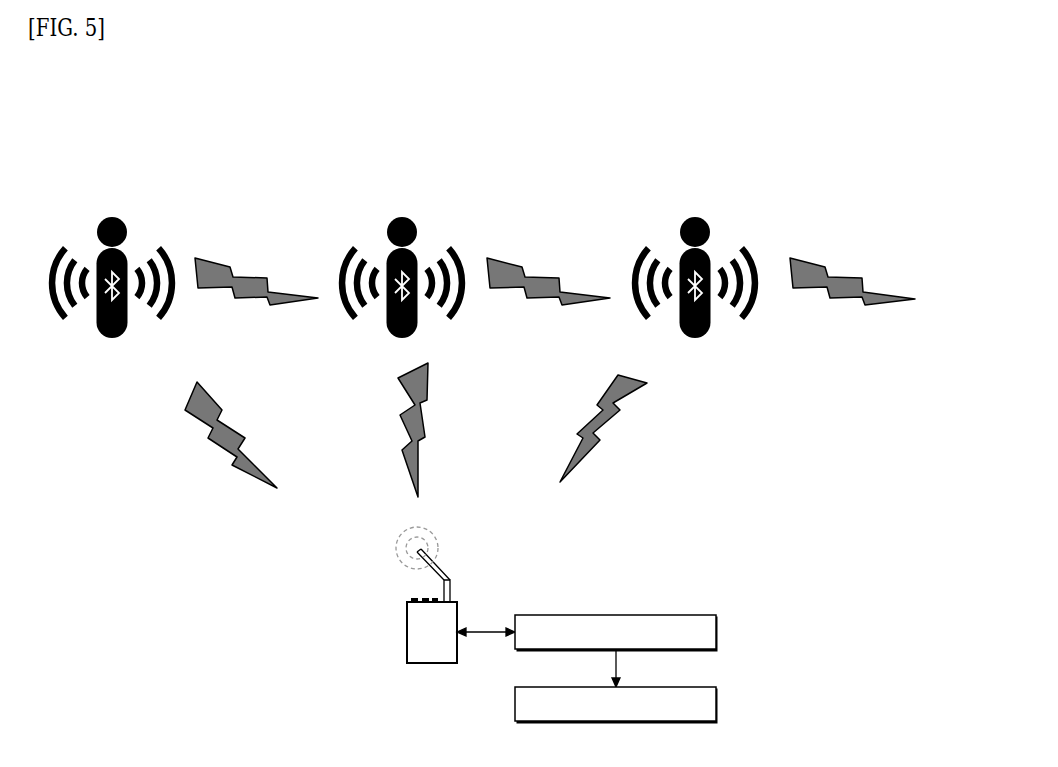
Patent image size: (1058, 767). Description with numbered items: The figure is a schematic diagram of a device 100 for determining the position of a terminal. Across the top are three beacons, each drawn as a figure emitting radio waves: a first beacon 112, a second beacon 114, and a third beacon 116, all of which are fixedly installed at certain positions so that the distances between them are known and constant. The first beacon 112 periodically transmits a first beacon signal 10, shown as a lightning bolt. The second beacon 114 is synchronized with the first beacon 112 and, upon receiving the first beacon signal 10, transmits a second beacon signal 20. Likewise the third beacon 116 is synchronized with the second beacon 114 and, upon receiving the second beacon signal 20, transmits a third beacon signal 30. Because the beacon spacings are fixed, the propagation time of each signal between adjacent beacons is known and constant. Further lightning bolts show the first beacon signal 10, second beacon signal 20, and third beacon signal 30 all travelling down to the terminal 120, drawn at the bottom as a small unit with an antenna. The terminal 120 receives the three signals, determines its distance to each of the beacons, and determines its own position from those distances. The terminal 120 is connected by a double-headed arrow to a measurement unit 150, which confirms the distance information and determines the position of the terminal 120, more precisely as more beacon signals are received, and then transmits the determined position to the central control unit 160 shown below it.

The device for determining the position of a terminal 100 is at (786, 108).
The first beacon 112 is at (158, 225).
The second beacon 114 is at (445, 225).
The third beacon 116 is at (737, 225).
The first beacon signal 10 is at (247, 273).
The second beacon signal 20 is at (537, 273).
The third beacon signal 30 is at (843, 272).
The terminal 120 is at (400, 668).
The measurement unit 150 is at (718, 631).
The central control unit 160 is at (718, 702).